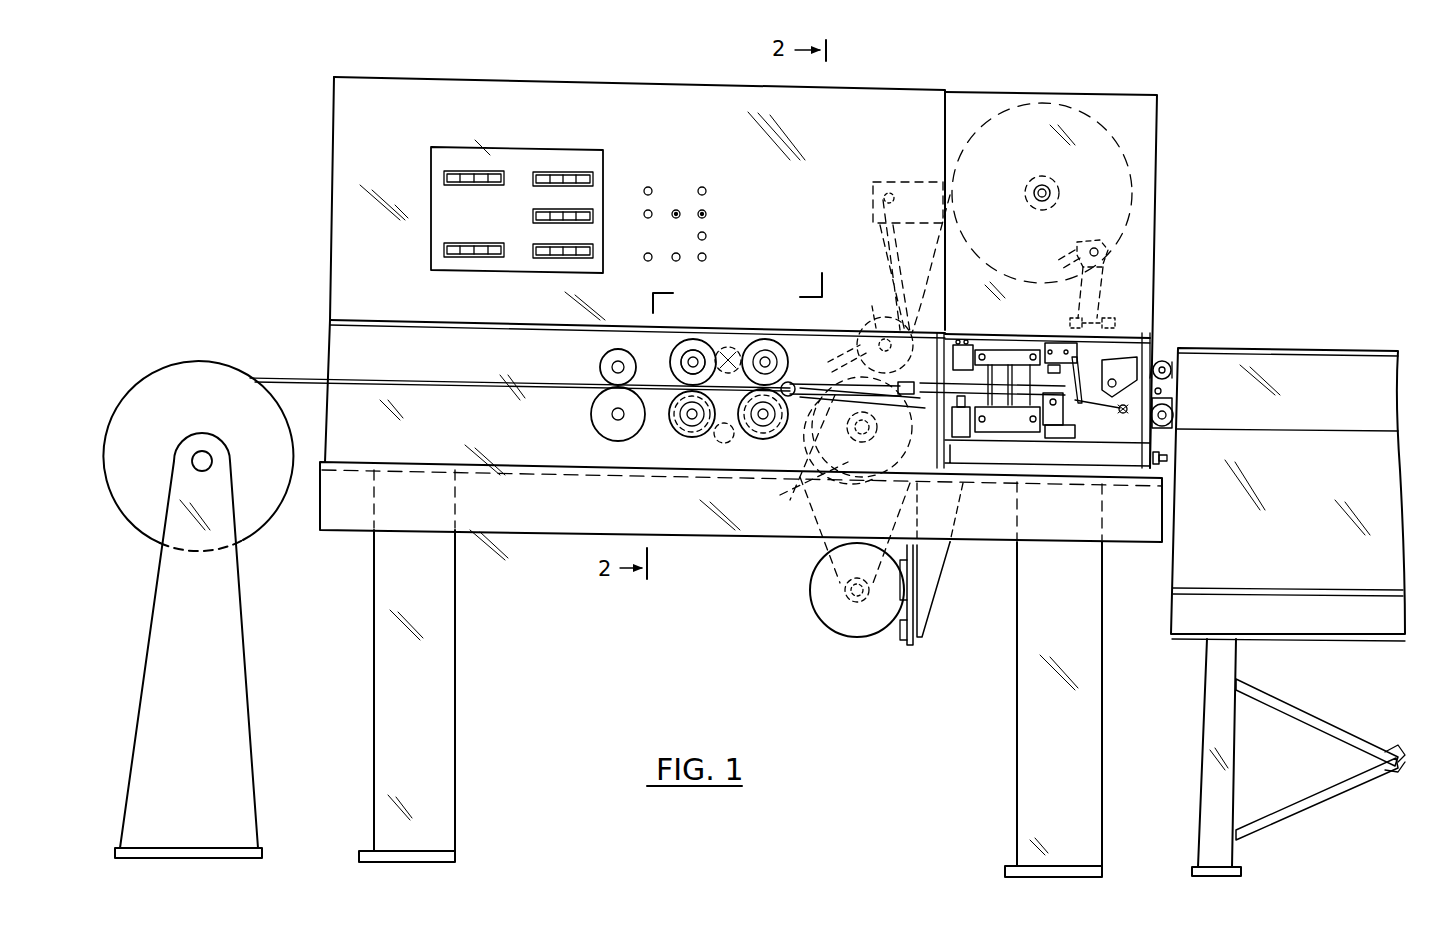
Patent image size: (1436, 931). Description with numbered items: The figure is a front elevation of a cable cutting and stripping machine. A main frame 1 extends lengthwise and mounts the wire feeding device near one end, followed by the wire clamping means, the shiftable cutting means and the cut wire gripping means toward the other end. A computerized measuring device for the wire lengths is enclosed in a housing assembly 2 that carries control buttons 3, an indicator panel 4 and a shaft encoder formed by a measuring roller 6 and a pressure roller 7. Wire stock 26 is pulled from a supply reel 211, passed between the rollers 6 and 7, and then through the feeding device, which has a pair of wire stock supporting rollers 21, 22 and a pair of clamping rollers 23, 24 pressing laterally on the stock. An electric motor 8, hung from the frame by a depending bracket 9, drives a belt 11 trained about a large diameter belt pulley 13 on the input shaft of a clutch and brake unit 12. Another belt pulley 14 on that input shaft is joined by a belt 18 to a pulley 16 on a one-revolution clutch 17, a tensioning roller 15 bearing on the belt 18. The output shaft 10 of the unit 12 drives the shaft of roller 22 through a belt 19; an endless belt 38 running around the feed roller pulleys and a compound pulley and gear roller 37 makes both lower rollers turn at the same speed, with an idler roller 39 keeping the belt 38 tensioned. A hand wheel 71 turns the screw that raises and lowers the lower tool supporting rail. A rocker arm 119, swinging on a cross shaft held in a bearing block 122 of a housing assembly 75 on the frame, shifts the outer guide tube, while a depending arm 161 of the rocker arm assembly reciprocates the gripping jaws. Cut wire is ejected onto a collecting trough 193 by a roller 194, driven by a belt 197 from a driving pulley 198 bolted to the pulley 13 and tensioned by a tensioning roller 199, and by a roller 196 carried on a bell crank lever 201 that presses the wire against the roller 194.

The main frame 1 is at (523, 532).
The housing assembly 2 is at (330, 120).
The control buttons 3 is at (712, 228).
The indicator panel 4 is at (505, 157).
The measuring roller 6 is at (592, 416).
The pressure roller 7 is at (602, 362).
The electric motor 8 is at (846, 622).
The depending bracket 9 is at (905, 628).
The output shaft 10 is at (866, 443).
The belt 11 is at (820, 555).
The clutch and brake unit 12 is at (840, 370).
The large diameter belt pulley 13 is at (863, 493).
The belt pulley 14 is at (839, 460).
The tensioning roller 15 is at (873, 304).
The pulley 16 is at (1130, 205).
The one-revolution clutch 17 is at (1054, 176).
The belt 18 is at (930, 283).
The belt 19 is at (778, 470).
The wire stock supporting roller 21 is at (680, 432).
The wire stock supporting roller 22 is at (752, 432).
The clamping roller 23 is at (680, 340).
The clamping roller 24 is at (775, 343).
The wire stock 26 is at (395, 380).
The compound pulley and gear roller 37 is at (735, 346).
The endless belt 38 is at (680, 362).
The idler roller 39 is at (714, 443).
The hand wheel 71 is at (1168, 458).
The housing assembly 75 is at (1150, 166).
The rocker arm 119 is at (888, 234).
The bearing block 122 is at (883, 182).
The depending arm 161 is at (1104, 284).
The collecting trough 193 is at (1328, 349).
The roller 194 is at (1174, 416).
The roller 196 is at (1166, 360).
The belt 197 is at (1115, 443).
The driving pulley 198 is at (837, 530).
The tensioning roller 199 is at (1120, 410).
The bell crank lever 201 is at (1138, 324).
The supply reel 211 is at (196, 372).